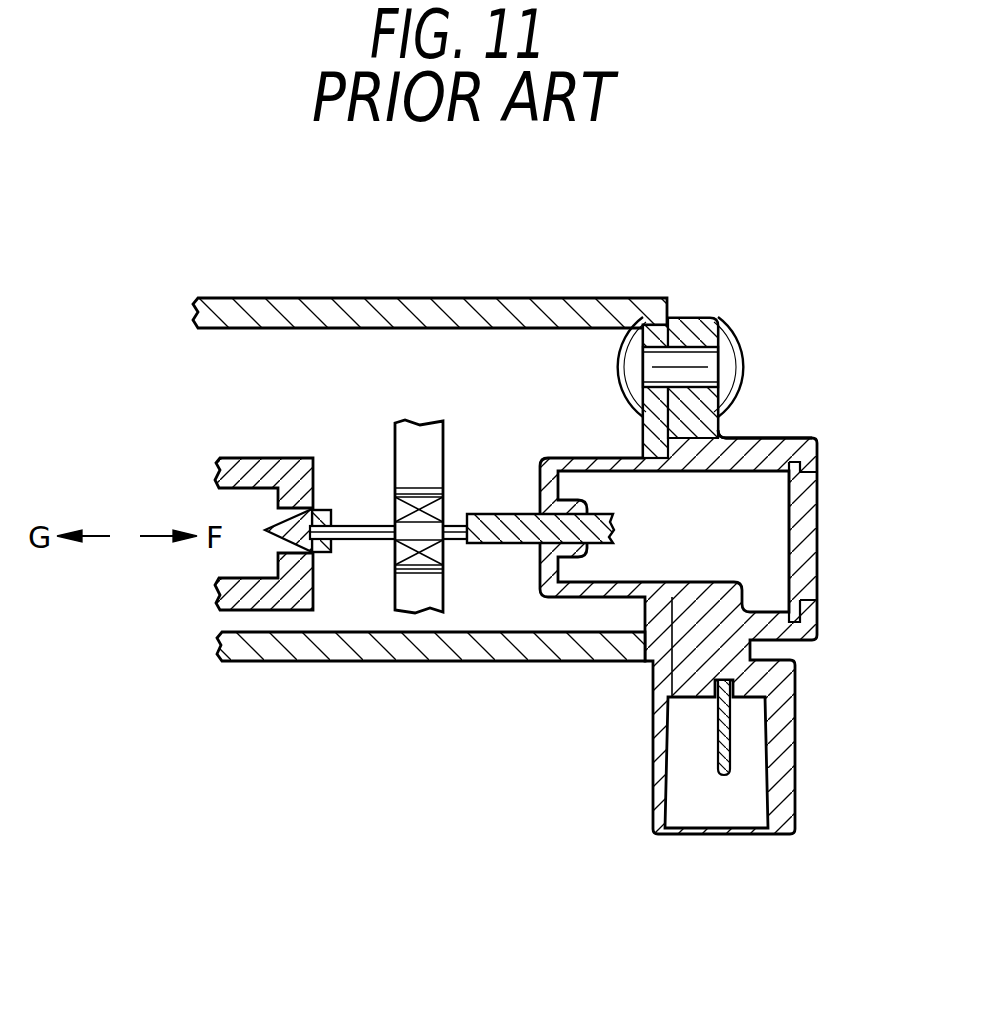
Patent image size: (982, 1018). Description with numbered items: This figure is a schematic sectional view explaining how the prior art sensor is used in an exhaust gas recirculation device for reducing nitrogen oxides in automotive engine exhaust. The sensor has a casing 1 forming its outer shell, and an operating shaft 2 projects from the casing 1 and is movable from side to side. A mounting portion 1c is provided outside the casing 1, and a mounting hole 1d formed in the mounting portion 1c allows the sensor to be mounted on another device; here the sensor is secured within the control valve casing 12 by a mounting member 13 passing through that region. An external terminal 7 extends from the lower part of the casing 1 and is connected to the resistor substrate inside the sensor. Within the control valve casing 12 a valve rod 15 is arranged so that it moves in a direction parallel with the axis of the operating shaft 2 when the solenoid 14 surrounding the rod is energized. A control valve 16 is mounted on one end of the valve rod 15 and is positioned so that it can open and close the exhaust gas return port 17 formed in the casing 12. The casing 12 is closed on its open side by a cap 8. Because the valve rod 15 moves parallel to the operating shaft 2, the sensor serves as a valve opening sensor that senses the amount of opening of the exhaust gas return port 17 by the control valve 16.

The casing 1 is at (558, 432).
The mounting portion 1c is at (708, 318).
The mounting hole 1d is at (722, 418).
The operating shaft 2 is at (512, 543).
The external terminal 7 is at (716, 766).
The cap 8 is at (815, 532).
The control valve casing 12 is at (447, 664).
The mounting member 13 is at (713, 358).
The solenoid 14 is at (393, 524).
The valve rod 15 is at (353, 524).
The control valve 16 is at (262, 533).
The exhaust gas return port 17 is at (233, 512).